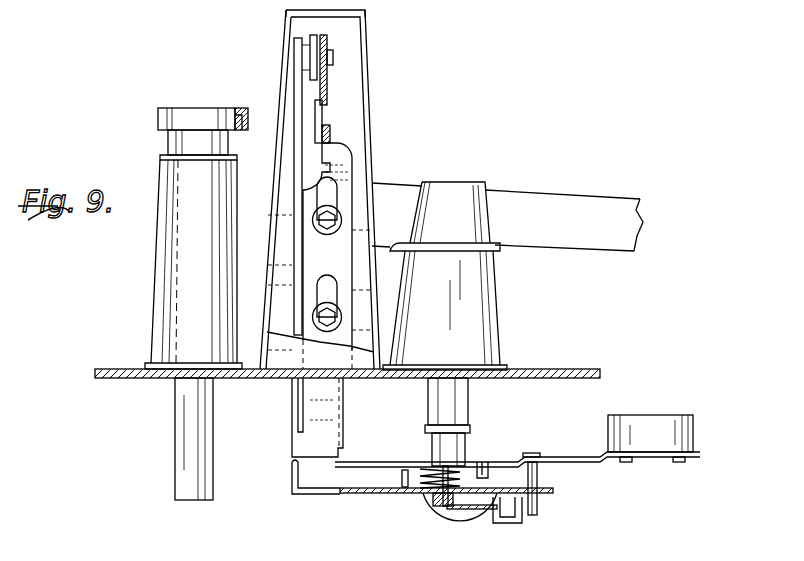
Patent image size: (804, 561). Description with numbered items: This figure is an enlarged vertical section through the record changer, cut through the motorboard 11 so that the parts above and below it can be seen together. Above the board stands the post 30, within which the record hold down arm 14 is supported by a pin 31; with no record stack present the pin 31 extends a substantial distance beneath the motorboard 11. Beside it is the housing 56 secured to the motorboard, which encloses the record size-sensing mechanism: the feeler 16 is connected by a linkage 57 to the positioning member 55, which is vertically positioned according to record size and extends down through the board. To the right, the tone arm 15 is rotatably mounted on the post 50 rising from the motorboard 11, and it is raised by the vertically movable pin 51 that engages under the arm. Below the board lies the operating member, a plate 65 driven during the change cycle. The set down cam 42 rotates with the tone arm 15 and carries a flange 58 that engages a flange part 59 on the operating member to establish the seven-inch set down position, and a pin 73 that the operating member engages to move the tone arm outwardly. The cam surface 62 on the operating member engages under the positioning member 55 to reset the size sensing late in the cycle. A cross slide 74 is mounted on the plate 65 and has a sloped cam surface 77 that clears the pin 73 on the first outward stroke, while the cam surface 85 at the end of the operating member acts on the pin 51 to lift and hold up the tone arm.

The motorboard 11 is at (566, 378).
The record hold down arm 14 is at (207, 118).
The tone arm 15 is at (575, 207).
The feeler 16 is at (323, 80).
The post 30 is at (163, 300).
The pin 31 is at (188, 432).
The set down cam 42 is at (572, 460).
The post 50 is at (480, 302).
The vertically movable pin 51 is at (448, 484).
The positioning member 55 is at (300, 440).
The housing 56 is at (368, 95).
The linkage 57 is at (318, 118).
The flange 58 is at (487, 468).
The flange part 59 is at (401, 470).
The cam surface 62 is at (292, 470).
The operating member (plate) 65 is at (367, 494).
The pin 73 is at (537, 516).
The cross slide 74 is at (507, 494).
The sloped cam surface 77 is at (513, 522).
The cam surface 85 is at (455, 507).